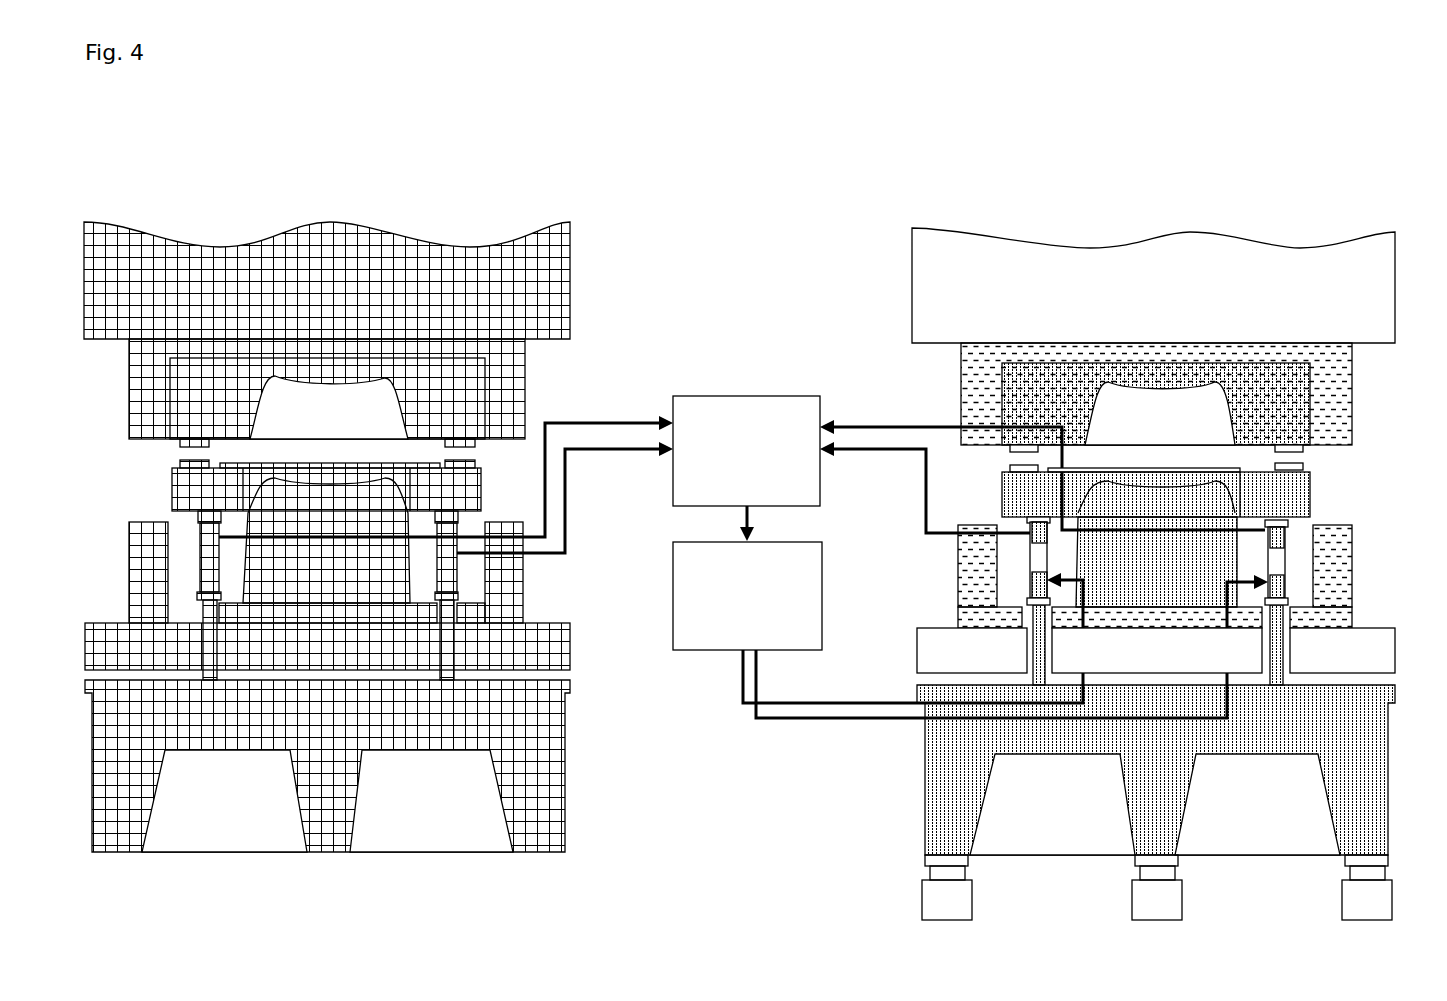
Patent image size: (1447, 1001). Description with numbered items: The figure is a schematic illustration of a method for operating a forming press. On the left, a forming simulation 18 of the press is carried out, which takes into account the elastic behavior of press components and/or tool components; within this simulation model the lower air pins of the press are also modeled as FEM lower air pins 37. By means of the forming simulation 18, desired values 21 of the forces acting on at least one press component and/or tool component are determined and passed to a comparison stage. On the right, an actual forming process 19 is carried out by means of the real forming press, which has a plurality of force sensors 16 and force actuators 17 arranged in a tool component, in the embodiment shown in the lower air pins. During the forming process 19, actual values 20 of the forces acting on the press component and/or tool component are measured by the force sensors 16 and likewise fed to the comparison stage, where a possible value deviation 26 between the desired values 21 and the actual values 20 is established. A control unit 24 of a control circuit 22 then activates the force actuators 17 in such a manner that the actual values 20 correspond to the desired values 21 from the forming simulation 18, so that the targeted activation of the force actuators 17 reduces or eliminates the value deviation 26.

The forming simulation 18 is at (143, 168).
The actual forming process 19 is at (912, 165).
The FEM lower air pins 37 is at (200, 558).
The desired values 21 is at (618, 426).
The value deviation 26 is at (745, 394).
The control unit 24 is at (703, 652).
The actual values 20 is at (893, 430).
The control circuit 22 is at (835, 738).
The force sensors 16 is at (1034, 523).
The force actuators 17 is at (1040, 575).